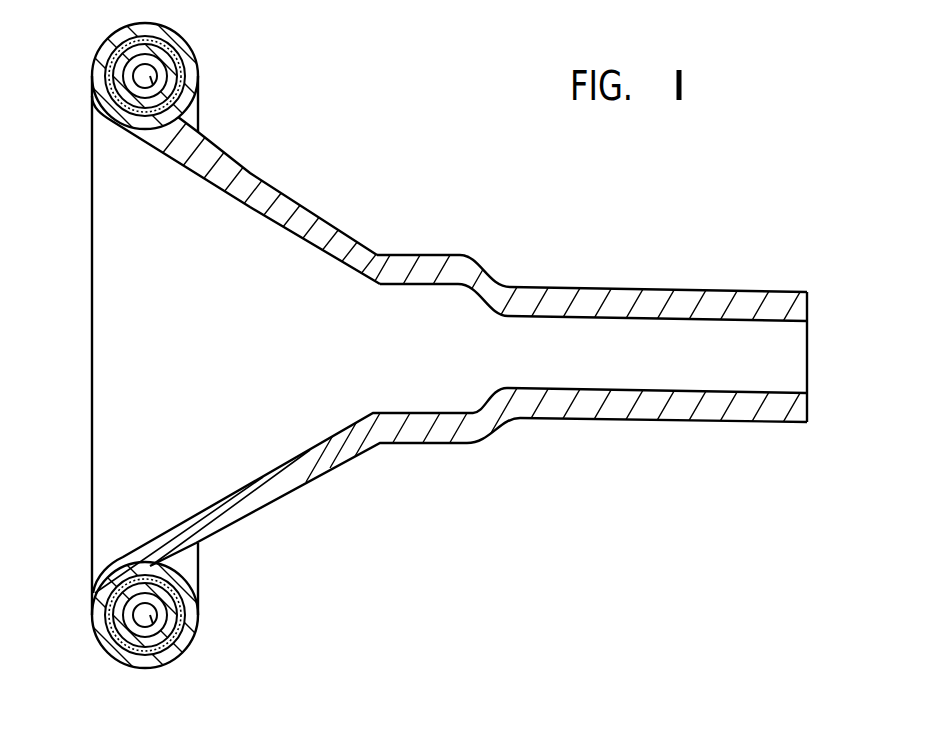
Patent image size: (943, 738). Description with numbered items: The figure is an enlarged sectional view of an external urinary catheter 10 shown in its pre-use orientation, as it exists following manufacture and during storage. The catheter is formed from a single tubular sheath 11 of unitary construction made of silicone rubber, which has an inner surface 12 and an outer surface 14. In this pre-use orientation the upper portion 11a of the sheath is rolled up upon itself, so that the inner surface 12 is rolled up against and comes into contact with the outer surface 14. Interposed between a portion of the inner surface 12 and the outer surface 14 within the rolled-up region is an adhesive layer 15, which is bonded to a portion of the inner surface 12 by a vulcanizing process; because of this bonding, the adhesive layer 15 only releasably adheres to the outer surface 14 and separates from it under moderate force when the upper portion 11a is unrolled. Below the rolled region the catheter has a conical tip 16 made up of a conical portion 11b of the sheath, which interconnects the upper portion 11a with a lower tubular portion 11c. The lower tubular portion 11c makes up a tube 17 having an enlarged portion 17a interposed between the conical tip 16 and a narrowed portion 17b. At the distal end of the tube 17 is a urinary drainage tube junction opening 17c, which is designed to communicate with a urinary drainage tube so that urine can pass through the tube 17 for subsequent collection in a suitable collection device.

The external urinary catheter 10 is at (400, 162).
The tubular sheath 11 is at (186, 35).
The upper portion 11a is at (110, 645).
The conical portion 11b is at (450, 484).
The lower tubular portion 11c is at (622, 422).
The inner surface 12 is at (100, 50).
The outer surface 14 is at (270, 186).
The adhesive layer 15 is at (187, 70).
The conical tip 16 is at (297, 492).
The tube 17 is at (613, 306).
The enlarged portion 17a is at (427, 255).
The narrowed portion 17b is at (703, 290).
The urinary drainage tube junction opening 17c is at (767, 360).